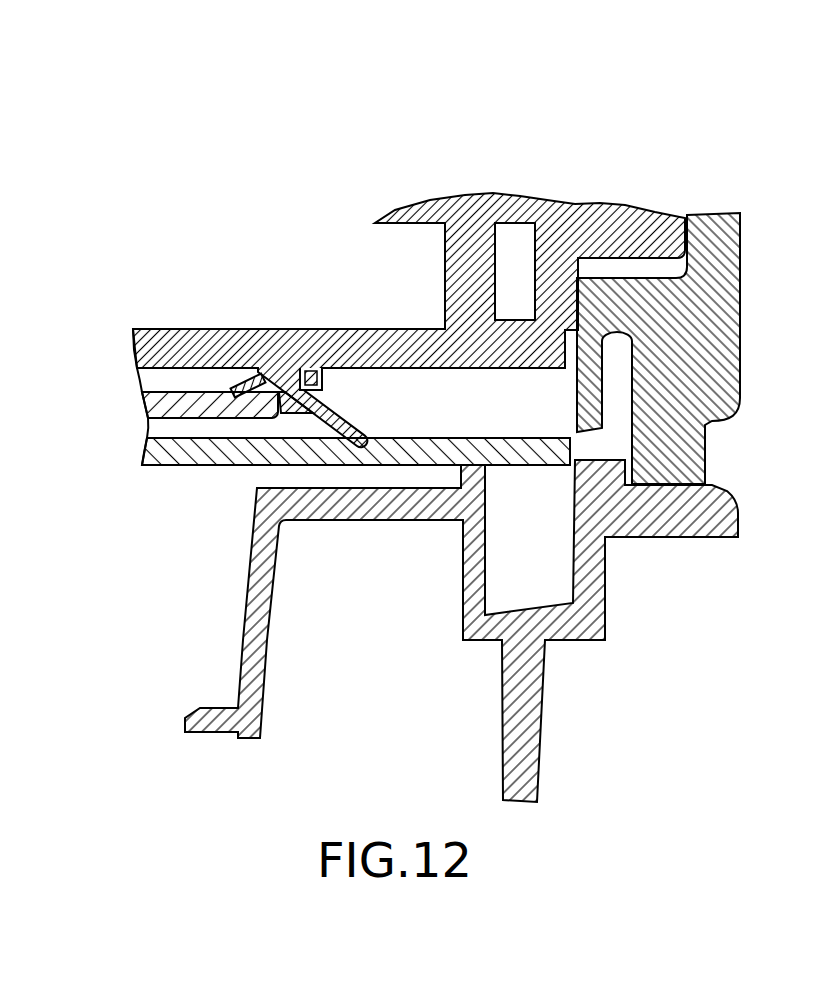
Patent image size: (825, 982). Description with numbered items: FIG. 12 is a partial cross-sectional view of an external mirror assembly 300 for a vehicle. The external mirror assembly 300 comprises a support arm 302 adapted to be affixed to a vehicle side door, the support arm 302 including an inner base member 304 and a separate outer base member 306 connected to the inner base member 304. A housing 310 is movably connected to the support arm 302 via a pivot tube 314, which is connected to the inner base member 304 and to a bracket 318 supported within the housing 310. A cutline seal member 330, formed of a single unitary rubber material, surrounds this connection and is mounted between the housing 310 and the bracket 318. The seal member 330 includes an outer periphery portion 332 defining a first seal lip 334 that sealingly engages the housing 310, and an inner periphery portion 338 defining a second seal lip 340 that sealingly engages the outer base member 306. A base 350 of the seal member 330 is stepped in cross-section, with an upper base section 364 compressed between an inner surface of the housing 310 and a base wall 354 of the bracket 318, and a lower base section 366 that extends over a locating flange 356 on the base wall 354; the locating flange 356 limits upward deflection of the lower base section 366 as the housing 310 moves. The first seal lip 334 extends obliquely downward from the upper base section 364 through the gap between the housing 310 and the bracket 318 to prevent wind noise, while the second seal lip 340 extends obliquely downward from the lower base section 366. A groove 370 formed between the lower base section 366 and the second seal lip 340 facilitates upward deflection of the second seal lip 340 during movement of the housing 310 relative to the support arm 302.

The external mirror assembly 300 is at (266, 138).
The support arm 302 is at (426, 631).
The inner base member 304 is at (392, 522).
The outer base member 306 is at (340, 493).
The housing 310 is at (197, 418).
The pivot tube 314 is at (740, 350).
The bracket 318 is at (409, 418).
The cutline seal member 330 is at (296, 426).
The outer periphery portion 332 is at (201, 337).
The first seal lip 334 is at (240, 392).
The inner periphery portion 338 is at (409, 418).
The second seal lip 340 is at (409, 418).
The base 350 is at (409, 418).
The base wall 354 is at (178, 370).
The locating flange 356 is at (311, 386).
The upper base section 364 is at (409, 418).
The lower base section 366 is at (248, 248).
The groove 370 is at (409, 418).